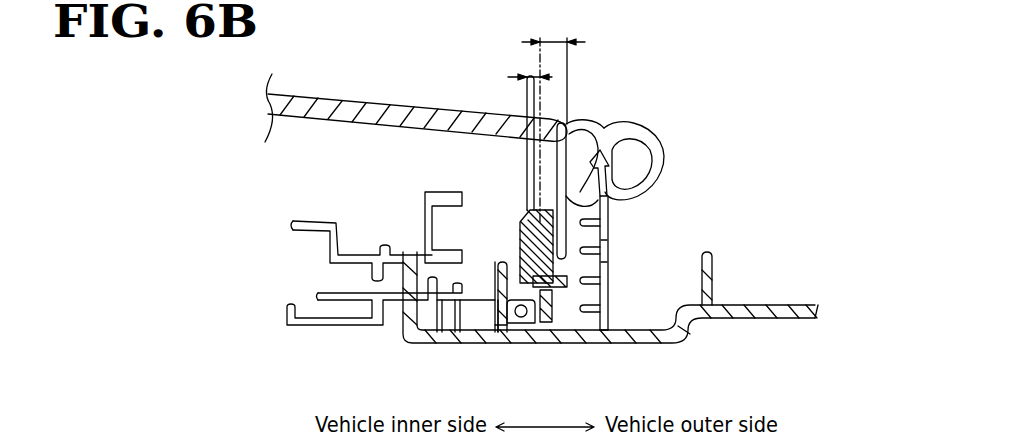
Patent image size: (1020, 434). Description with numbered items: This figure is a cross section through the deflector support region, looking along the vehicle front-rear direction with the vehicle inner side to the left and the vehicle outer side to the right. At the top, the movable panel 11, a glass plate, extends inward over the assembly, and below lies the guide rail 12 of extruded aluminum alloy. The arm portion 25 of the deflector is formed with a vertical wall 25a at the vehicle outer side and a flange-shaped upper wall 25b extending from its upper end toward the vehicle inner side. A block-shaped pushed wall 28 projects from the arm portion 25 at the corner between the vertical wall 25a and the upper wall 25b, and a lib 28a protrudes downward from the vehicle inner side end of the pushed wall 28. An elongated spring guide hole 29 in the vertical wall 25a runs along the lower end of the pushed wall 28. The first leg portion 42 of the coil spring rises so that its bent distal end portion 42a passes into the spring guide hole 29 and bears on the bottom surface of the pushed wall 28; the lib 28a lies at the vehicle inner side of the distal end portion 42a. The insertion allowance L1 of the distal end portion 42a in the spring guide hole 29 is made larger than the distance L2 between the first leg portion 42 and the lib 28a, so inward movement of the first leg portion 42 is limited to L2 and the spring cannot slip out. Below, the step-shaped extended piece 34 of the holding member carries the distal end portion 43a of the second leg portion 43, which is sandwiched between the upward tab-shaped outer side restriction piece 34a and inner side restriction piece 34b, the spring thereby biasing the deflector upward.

The movable panel 11 is at (300, 95).
The guide rail 12 is at (656, 346).
The arm portion 25 is at (609, 225).
The vertical wall 25a is at (609, 316).
The upper wall 25b is at (522, 207).
The pushed wall 28 is at (518, 217).
The lib 28a is at (497, 266).
The spring guide hole 29 is at (609, 289).
The extended piece 34 is at (526, 331).
The outer side restriction piece 34a is at (537, 345).
The inner side restriction piece 34b is at (497, 307).
The first leg portion 42 is at (637, 261).
The distal end portion 42a is at (609, 256).
The second leg portion 43 is at (391, 299).
The distal end portion 43a is at (496, 338).
The insertion allowance L1 is at (568, 40).
The distance L2 is at (527, 74).